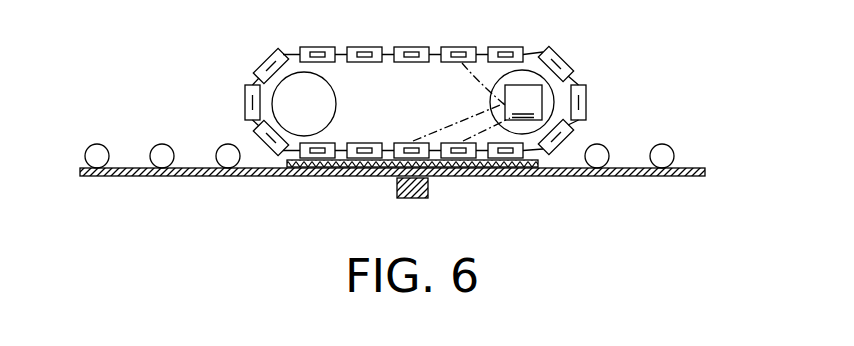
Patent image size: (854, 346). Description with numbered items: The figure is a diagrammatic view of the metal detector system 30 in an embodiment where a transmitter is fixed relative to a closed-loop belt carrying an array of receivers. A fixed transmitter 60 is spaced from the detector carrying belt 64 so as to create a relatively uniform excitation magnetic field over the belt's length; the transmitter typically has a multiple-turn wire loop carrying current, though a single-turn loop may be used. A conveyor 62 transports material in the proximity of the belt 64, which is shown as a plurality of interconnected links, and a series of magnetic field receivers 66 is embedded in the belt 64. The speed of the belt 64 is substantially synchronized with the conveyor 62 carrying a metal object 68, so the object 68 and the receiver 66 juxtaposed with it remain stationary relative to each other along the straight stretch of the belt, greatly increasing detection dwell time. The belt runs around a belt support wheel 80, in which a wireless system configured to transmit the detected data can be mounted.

The metal detector system 30 is at (465, 81).
The fixed transmitter 60 is at (307, 177).
The conveyor 62 is at (215, 178).
The detector carrying belt 64 is at (537, 53).
The magnetic field receivers 66 is at (357, 47).
The metal object 68 is at (414, 199).
The belt support wheel 80 is at (555, 115).